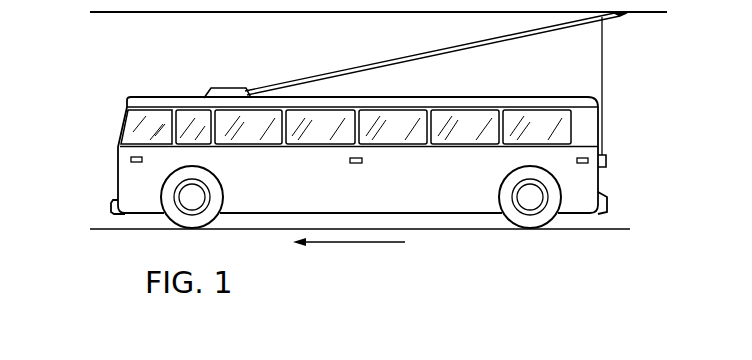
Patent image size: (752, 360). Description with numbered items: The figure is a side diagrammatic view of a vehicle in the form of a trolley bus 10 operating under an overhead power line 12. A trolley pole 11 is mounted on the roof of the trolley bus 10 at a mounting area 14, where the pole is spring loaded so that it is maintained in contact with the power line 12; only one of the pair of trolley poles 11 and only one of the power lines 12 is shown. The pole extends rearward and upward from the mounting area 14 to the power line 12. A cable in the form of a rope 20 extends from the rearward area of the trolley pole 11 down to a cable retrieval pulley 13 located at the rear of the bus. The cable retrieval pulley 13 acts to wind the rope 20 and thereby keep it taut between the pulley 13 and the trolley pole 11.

The trolley bus 10 is at (101, 124).
The trolley pole 11 is at (368, 65).
The overhead power line 12 is at (263, 13).
The cable retrieval pulley 13 is at (606, 160).
The mounting area 14 is at (217, 88).
The rope 20 is at (603, 66).